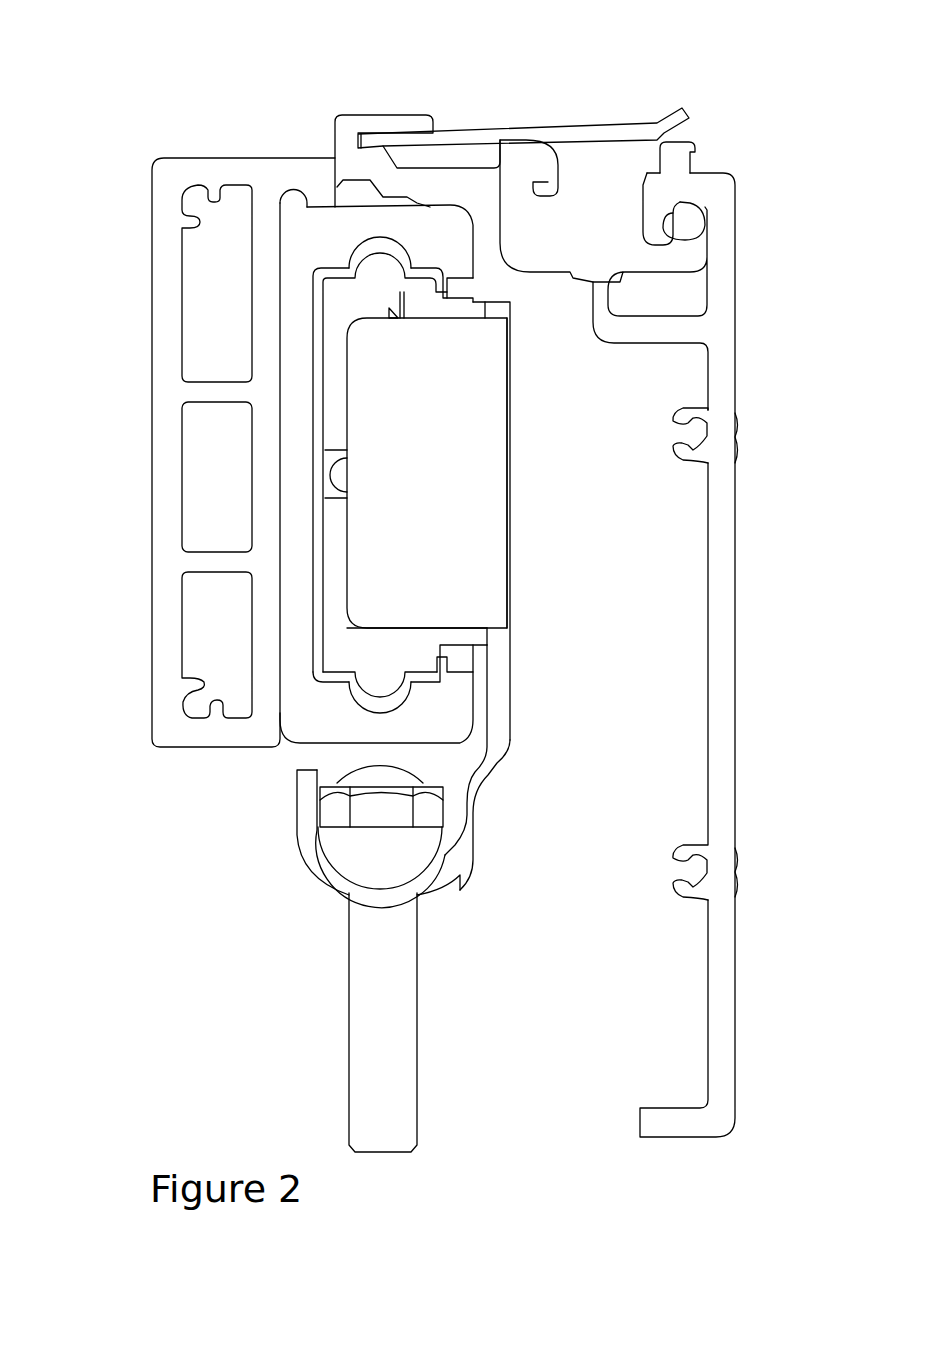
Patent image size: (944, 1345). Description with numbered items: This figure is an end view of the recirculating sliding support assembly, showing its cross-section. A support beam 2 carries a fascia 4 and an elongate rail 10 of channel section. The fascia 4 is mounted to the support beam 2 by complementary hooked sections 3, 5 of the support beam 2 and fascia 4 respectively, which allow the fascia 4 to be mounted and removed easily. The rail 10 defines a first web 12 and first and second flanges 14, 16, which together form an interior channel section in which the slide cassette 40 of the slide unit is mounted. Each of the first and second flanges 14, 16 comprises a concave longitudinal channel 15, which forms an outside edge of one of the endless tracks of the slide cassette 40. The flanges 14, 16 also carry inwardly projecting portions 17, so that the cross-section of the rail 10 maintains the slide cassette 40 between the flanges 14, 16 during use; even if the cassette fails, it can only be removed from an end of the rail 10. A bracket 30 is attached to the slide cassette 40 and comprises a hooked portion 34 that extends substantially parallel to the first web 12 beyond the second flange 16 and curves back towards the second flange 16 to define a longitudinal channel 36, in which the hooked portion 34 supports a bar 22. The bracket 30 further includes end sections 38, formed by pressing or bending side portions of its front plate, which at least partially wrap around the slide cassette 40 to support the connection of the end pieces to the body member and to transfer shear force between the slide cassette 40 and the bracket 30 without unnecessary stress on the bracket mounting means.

The support beam 2 is at (137, 460).
The hooked section 3 is at (602, 252).
The fascia 4 is at (753, 692).
The hooked section 5 is at (668, 191).
The elongate rail 10 is at (438, 221).
The first web 12 is at (285, 330).
The first flange 14 is at (387, 230).
The concave longitudinal channel 15 is at (364, 235).
The second flange 16 is at (327, 730).
The inwardly projecting portion 17 is at (474, 285).
The bar 22 is at (426, 859).
The bracket 30 is at (520, 434).
The hooked portion 34 is at (497, 781).
The longitudinal channel 36 is at (307, 863).
The end section 38 is at (435, 510).
The slide cassette 40 is at (409, 647).